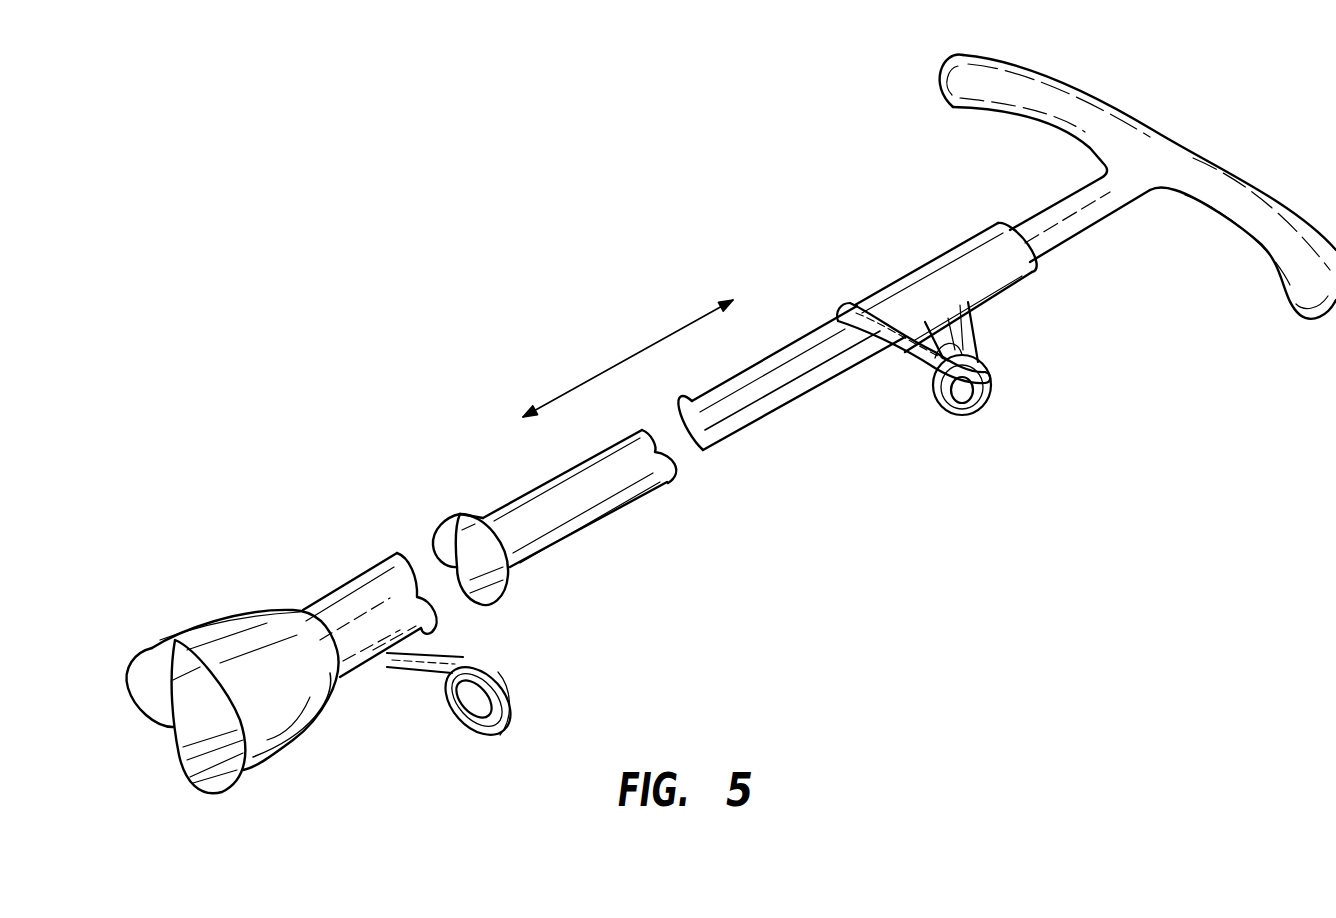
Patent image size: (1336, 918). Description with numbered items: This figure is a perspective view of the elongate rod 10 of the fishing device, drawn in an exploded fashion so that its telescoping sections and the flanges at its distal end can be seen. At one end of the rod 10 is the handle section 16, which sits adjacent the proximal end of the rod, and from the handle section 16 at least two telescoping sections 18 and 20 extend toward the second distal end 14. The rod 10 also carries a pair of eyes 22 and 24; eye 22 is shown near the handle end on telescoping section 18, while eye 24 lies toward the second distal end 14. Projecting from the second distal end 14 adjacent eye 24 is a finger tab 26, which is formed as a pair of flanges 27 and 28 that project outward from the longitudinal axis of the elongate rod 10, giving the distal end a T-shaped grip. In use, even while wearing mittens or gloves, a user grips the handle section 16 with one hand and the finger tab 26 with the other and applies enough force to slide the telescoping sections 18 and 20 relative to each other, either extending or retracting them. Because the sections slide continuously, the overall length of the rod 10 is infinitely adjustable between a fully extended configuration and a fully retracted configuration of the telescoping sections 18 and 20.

The elongate rod 10 is at (628, 548).
The second distal end 14 is at (1032, 268).
The handle section 16 is at (217, 633).
The telescoping section 18 is at (377, 577).
The telescoping section 20 is at (750, 437).
The eye 22 is at (487, 737).
The eye 24 is at (983, 414).
The finger tab 26 is at (1117, 242).
The flange 27 is at (1017, 113).
The flange 28 is at (1205, 210).